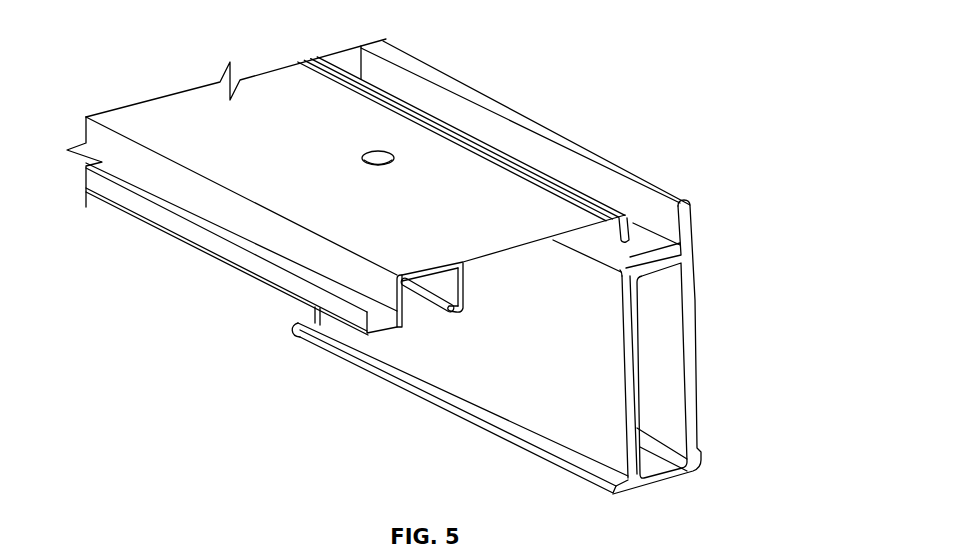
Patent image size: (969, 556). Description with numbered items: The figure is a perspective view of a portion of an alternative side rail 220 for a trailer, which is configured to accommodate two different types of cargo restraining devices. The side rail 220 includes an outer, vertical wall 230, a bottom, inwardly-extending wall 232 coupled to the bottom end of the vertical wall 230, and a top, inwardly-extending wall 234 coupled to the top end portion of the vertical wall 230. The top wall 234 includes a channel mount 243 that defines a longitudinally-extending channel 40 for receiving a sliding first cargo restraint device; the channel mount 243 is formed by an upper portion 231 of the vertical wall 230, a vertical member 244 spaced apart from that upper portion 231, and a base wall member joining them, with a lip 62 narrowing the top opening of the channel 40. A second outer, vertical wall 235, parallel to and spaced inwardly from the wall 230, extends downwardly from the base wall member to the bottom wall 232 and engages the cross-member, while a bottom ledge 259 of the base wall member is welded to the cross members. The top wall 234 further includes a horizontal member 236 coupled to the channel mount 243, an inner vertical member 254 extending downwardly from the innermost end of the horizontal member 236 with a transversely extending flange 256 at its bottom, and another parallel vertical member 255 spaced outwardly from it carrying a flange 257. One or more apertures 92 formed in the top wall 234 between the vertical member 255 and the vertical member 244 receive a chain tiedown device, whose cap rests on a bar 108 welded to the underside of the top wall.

The side rail 220 is at (542, 54).
The channel 40 is at (583, 182).
The aperture 92 is at (381, 151).
The top wall 234 is at (175, 94).
The horizontal member 236 is at (277, 88).
The vertical member 254 is at (85, 140).
The flange 256 is at (170, 231).
The lip 62 is at (628, 230).
The vertical member 244 is at (625, 244).
The upper portion 231 is at (690, 232).
The second outer vertical wall 235 is at (633, 352).
The outer vertical wall 230 is at (693, 361).
The bottom wall 232 is at (514, 434).
The channel mount 243 is at (621, 272).
The bottom ledge 259 is at (572, 254).
The bar 108 is at (482, 270).
The flange 257 is at (453, 313).
The vertical member 255 is at (413, 287).